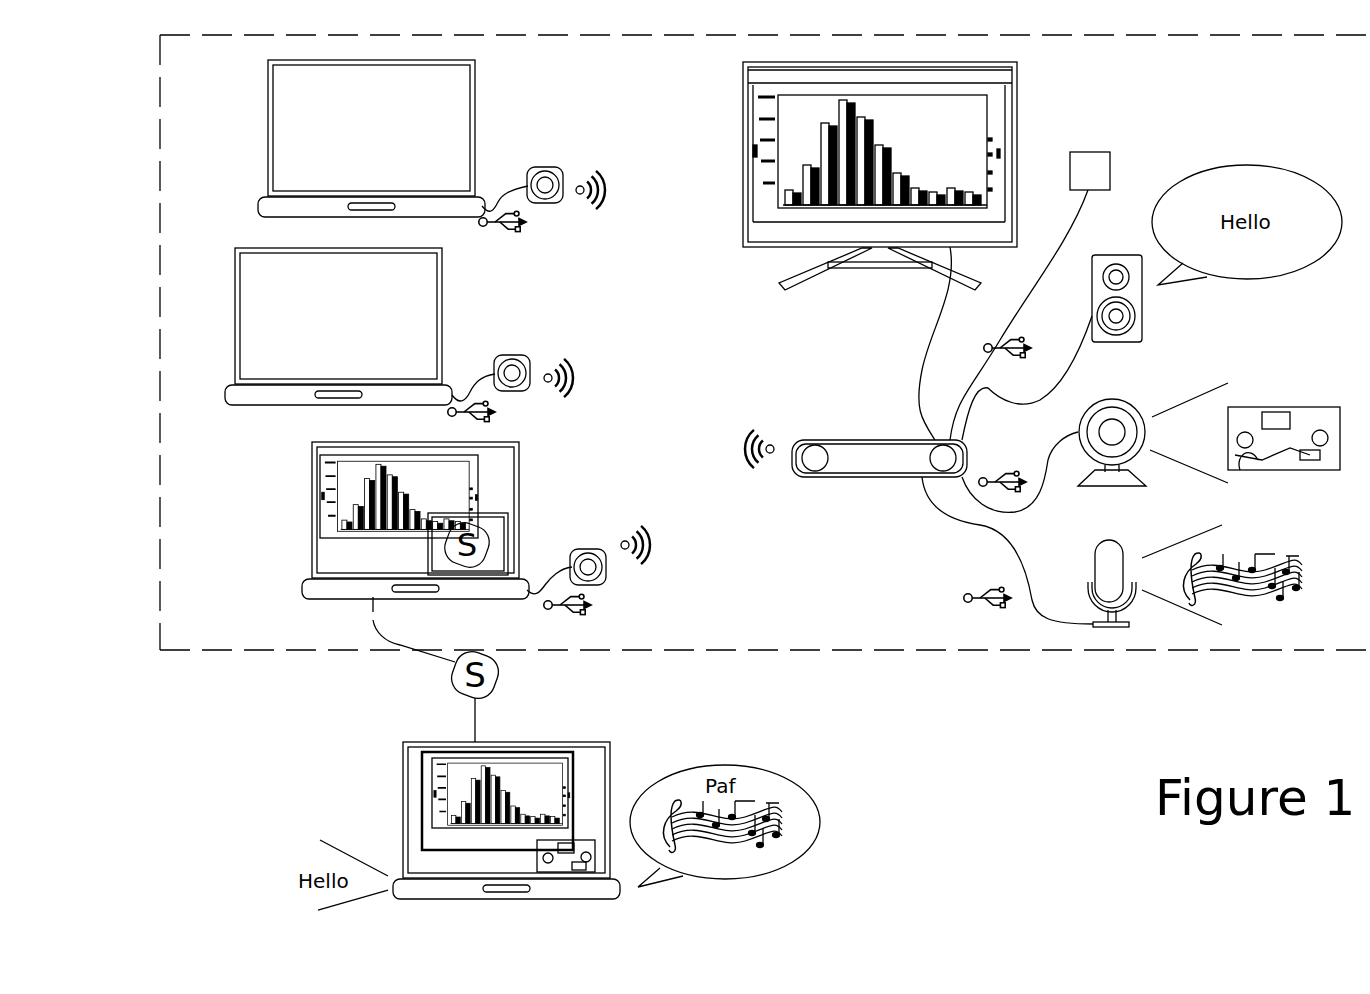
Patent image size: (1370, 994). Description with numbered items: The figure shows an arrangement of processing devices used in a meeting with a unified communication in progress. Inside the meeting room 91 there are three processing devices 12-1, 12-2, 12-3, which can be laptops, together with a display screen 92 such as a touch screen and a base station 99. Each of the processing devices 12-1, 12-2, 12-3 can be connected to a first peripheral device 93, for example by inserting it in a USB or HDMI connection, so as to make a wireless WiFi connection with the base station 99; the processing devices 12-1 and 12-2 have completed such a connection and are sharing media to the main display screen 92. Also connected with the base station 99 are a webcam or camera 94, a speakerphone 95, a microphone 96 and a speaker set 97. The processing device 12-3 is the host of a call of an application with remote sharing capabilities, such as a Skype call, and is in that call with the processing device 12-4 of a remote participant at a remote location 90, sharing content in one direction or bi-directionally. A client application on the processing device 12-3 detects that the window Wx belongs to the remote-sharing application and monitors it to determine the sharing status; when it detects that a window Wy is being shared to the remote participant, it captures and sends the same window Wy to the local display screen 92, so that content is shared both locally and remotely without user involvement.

The processing device 12-1 is at (433, 90).
The processing device 12-2 is at (407, 293).
The processing device 12-3 is at (492, 465).
The processing device 12-4 is at (582, 772).
The first peripheral device 93 is at (545, 184).
The display screen 92 is at (776, 247).
The webcam or camera 94 is at (1112, 432).
The speakerphone 95 is at (1088, 170).
The microphone 96 is at (1105, 553).
The speaker set 97 is at (1135, 300).
The base station 99 is at (896, 458).
The meeting room 91 is at (860, 602).
The remote location 90 is at (950, 823).
The window Wy is at (352, 482).
The window Wx is at (478, 565).